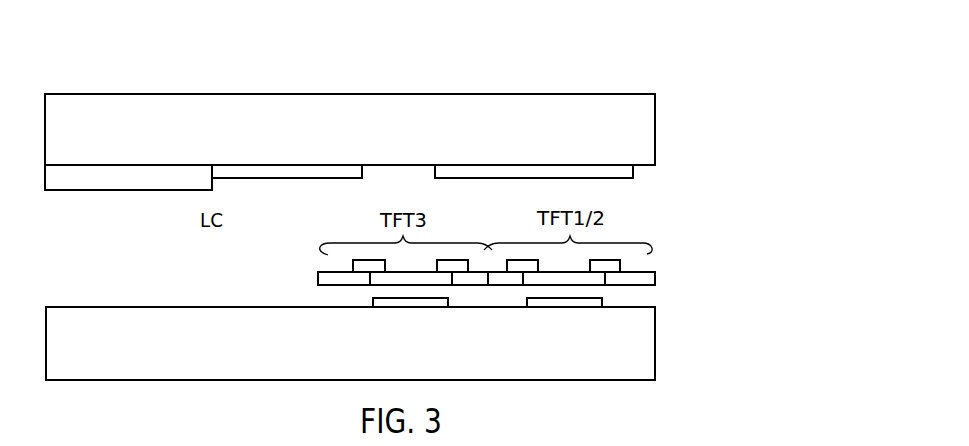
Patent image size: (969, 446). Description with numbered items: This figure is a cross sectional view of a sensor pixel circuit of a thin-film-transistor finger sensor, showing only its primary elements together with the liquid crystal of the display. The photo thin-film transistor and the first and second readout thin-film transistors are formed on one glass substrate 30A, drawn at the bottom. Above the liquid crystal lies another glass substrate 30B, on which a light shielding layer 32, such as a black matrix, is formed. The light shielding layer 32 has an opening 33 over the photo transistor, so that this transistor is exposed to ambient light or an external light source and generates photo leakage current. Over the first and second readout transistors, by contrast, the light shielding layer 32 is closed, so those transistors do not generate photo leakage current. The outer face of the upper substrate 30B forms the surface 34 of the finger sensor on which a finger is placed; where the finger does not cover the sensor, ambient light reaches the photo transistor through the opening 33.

The substrate 30A is at (655, 325).
The substrate 30B is at (655, 112).
The light shielding layer 32 is at (633, 178).
The opening 33 is at (395, 165).
The surface 34 is at (593, 90).